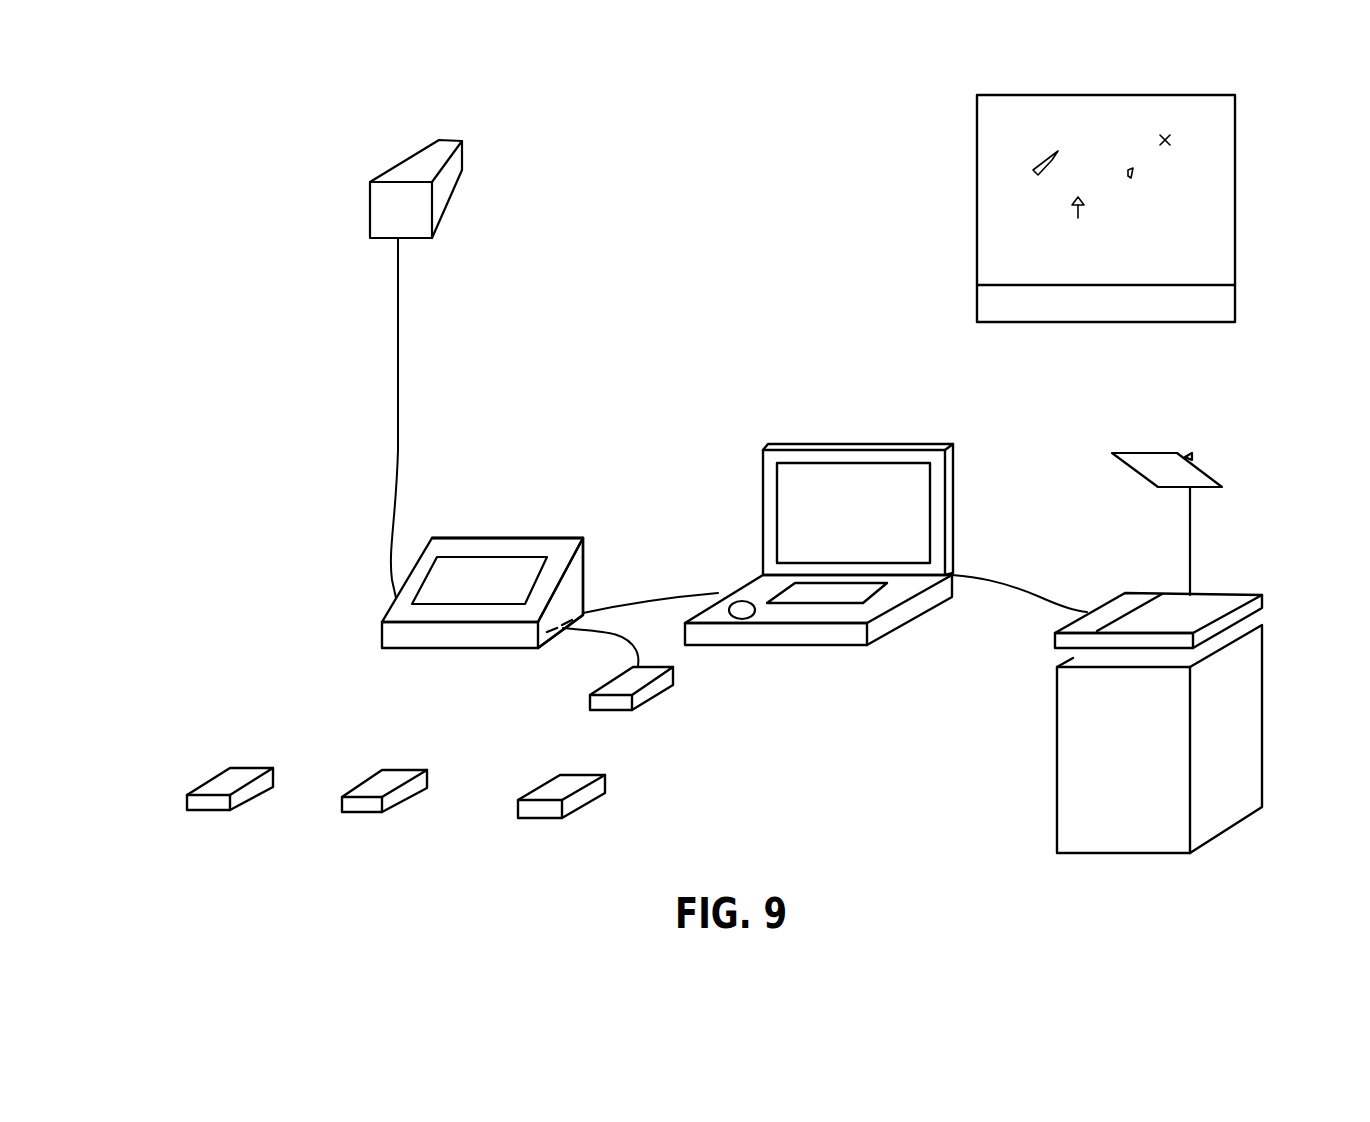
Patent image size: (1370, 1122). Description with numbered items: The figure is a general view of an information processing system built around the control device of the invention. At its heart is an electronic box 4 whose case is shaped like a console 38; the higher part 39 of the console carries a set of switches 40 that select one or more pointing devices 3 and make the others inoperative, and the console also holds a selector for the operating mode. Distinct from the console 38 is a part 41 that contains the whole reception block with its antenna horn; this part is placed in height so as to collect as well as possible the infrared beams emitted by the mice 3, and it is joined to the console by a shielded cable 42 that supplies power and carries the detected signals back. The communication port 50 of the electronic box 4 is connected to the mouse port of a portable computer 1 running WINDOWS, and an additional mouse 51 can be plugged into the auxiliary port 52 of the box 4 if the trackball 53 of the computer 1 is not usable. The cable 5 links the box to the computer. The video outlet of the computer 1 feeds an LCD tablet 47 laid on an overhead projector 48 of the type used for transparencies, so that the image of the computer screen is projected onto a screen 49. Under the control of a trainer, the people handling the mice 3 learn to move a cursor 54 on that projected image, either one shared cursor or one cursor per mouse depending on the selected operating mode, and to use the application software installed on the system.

The portable computer 1 is at (878, 630).
The pointing devices 3 is at (200, 805).
The electronic box 4 is at (378, 638).
The cable 5 is at (718, 593).
The console 38 is at (513, 540).
The higher part 39 is at (435, 547).
The switches 40 is at (432, 592).
The reception part 41 is at (365, 210).
The shielded cable 42 is at (398, 357).
The LCD tablet 47 is at (1212, 605).
The overhead projector 48 is at (1217, 697).
The screen 49 is at (1182, 240).
The communication port 50 is at (583, 613).
The additional mouse 51 is at (648, 693).
The auxiliary port 52 is at (560, 626).
The trackball 53 is at (743, 613).
The cursor 54 is at (1060, 148).